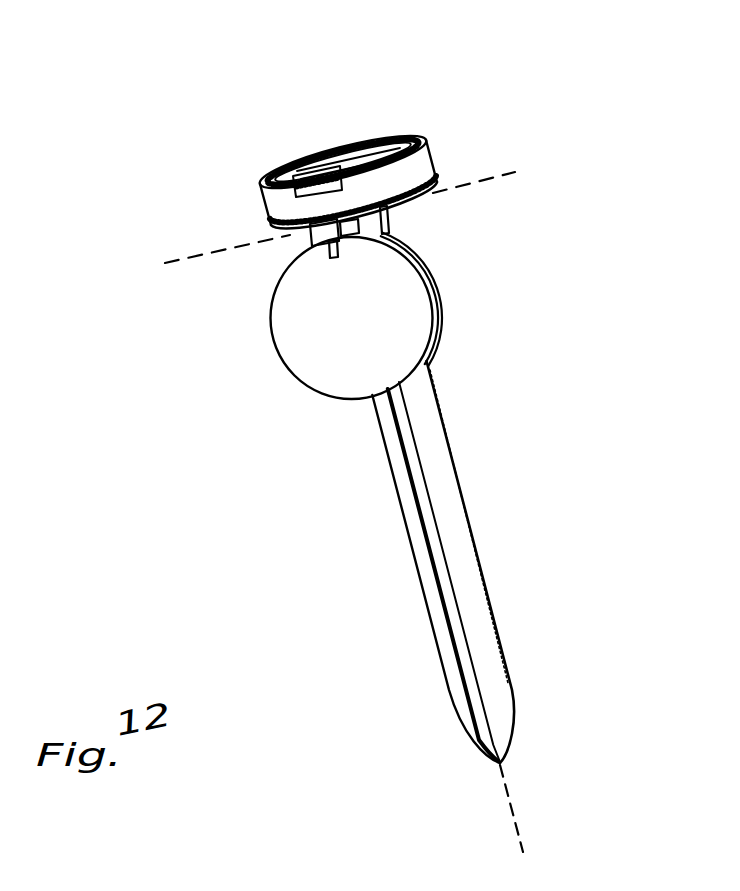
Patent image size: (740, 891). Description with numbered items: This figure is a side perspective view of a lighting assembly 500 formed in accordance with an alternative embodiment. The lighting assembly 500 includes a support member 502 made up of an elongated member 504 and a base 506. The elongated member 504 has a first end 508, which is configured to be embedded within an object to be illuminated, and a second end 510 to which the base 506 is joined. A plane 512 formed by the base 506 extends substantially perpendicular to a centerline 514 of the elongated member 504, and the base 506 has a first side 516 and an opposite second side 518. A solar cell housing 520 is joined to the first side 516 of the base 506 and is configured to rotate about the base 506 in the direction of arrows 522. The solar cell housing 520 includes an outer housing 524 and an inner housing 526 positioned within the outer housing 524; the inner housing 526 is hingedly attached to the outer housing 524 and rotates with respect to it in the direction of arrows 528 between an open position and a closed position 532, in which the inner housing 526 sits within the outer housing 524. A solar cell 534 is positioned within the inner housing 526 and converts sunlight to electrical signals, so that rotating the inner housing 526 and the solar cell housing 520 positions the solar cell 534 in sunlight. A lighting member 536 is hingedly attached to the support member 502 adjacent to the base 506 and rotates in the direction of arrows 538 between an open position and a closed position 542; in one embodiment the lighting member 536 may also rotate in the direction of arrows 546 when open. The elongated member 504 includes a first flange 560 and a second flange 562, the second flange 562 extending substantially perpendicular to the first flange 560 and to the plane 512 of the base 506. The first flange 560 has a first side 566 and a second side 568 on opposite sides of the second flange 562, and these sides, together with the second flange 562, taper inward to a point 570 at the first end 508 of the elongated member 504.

The lighting assembly 500 is at (530, 62).
The support member 502 is at (483, 402).
The elongated member 504 is at (468, 552).
The base 506 is at (412, 203).
The first end 508 is at (522, 755).
The second end 510 is at (408, 220).
The plane 512 is at (509, 170).
The centerline 514 is at (518, 828).
The first side 516 is at (259, 232).
The second side 518 is at (283, 248).
The solar cell housing 520 is at (437, 176).
The arrows 522 is at (180, 173).
The outer housing 524 is at (428, 152).
The inner housing 526 is at (398, 134).
The arrows 528 is at (266, 134).
The closed position 532 is at (185, 118).
The solar cell 534 is at (345, 140).
The lighting member 536 is at (297, 330).
The arrows 538 is at (137, 410).
The closed position 542 is at (323, 417).
The arrows 546 is at (167, 348).
The first flange 560 is at (450, 453).
The second flange 562 is at (447, 590).
The first side 566 is at (438, 653).
The second side 568 is at (462, 500).
The point 570 is at (502, 760).